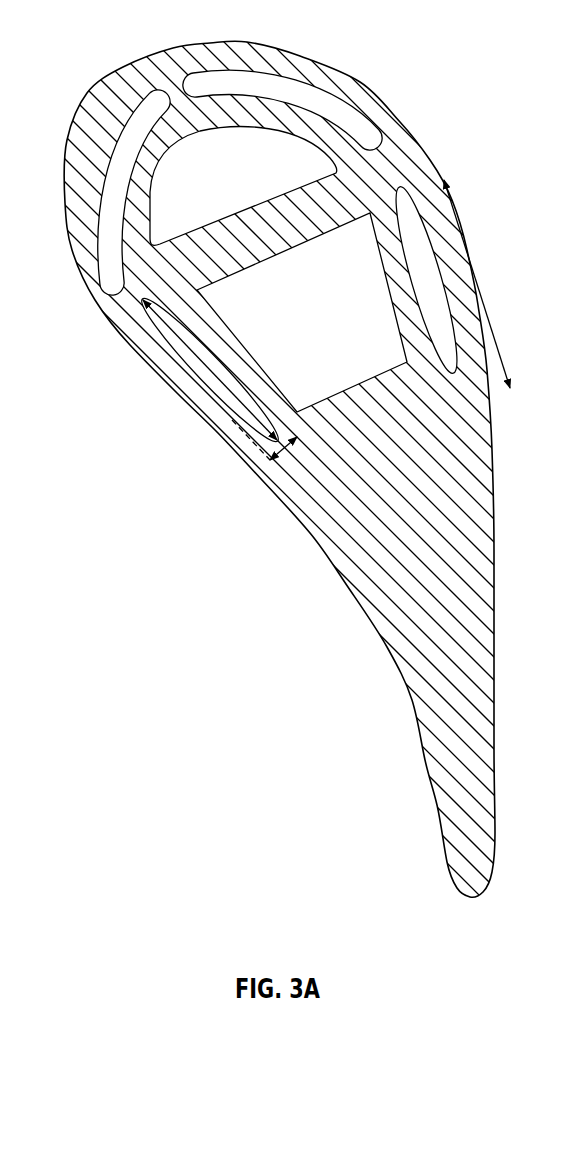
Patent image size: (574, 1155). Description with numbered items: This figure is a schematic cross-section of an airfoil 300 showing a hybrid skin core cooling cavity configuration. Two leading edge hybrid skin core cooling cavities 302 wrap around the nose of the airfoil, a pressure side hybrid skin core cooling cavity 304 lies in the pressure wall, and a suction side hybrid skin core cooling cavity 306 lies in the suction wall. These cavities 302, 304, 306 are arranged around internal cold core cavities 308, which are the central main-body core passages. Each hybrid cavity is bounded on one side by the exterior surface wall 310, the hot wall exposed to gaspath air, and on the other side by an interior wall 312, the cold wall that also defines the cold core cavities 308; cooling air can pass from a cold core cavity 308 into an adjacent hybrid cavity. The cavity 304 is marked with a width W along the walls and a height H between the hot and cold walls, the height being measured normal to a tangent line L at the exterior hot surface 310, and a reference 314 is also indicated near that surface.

The airfoil 300 is at (333, 30).
The leading edge hybrid skin core cooling cavities 302 is at (138, 130).
The pressure side hybrid skin core cooling cavity 304 is at (228, 402).
The suction side hybrid skin core cooling cavity 306 is at (415, 283).
The internal cold core cavities 308 is at (243, 195).
The exterior surface wall 310 is at (428, 146).
The interior wall 312 is at (137, 238).
The suction side surface 314 is at (513, 270).